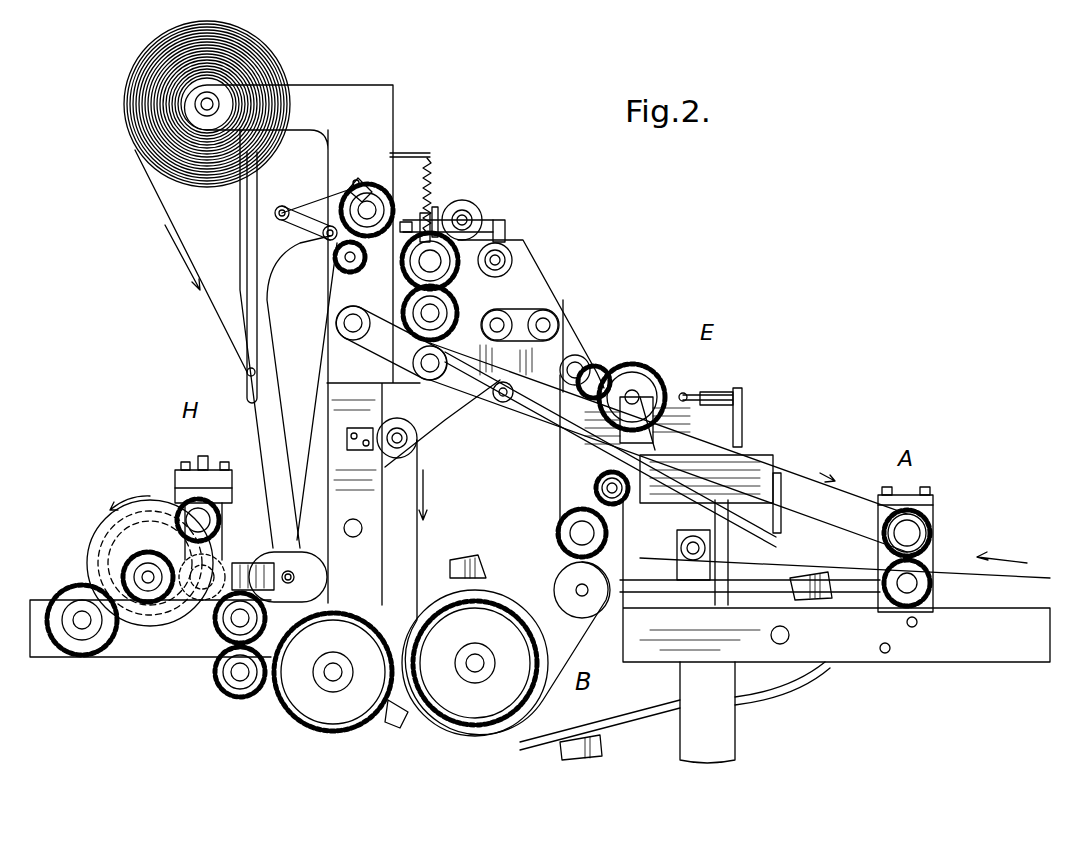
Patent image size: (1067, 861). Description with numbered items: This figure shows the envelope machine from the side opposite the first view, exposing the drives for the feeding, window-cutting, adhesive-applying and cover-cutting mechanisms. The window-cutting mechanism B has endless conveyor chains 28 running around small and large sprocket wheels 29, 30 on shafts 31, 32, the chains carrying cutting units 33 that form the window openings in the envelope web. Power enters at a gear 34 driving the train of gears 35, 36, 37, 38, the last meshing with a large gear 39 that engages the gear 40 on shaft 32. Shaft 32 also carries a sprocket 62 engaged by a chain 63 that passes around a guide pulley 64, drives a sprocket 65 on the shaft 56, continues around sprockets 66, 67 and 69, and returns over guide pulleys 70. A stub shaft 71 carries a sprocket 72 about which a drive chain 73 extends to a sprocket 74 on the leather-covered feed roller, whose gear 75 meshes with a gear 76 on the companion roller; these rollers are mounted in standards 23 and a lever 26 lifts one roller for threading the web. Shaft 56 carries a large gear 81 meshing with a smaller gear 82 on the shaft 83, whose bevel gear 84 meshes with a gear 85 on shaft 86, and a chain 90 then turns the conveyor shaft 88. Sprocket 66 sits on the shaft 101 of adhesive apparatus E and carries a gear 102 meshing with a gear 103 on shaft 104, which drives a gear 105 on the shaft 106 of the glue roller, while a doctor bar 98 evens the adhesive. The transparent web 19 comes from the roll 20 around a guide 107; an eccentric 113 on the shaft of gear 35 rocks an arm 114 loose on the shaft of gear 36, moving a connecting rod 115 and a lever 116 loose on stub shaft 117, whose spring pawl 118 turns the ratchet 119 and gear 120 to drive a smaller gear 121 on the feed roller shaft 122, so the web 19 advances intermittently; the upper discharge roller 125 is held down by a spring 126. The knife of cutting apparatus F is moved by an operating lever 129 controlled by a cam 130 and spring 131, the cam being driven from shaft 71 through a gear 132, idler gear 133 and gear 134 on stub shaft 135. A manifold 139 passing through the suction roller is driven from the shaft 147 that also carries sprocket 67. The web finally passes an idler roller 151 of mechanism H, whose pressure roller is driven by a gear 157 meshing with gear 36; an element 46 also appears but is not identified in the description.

The web of transparent paper 19 is at (200, 288).
The roll 20 is at (128, 146).
The standards 23 is at (934, 512).
The lever 26 is at (930, 570).
The endless conveyor chains 28 is at (652, 718).
The small sprocket wheels 29 is at (800, 672).
The large sprocket wheels 30 is at (555, 600).
The shaft 31 is at (790, 635).
The shaft 32 is at (470, 668).
The cutting units 33 is at (462, 556).
The gear 34 is at (100, 658).
The gear 35 is at (122, 560).
The gear 36 is at (170, 640).
The gear 37 is at (218, 640).
The gear 38 is at (238, 690).
The large gear 39 is at (305, 712).
The gear 40 is at (406, 726).
The bearing block 46 is at (710, 540).
The shaft 56 is at (570, 533).
The sprocket 62 is at (500, 726).
The chain 63 is at (420, 530).
The guide pulley 64 is at (606, 604).
The sprocket 65 is at (565, 545).
The sprocket 66 is at (563, 310).
The sprocket 67 is at (506, 358).
The sprocket 69 is at (360, 337).
The guide pulleys 70 is at (420, 448).
The stub shaft 71 is at (466, 372).
The sprocket 72 is at (472, 412).
The drive chain 73 is at (538, 416).
The sprocket 74 is at (888, 528).
The gear 75 is at (930, 536).
The gear 76 is at (930, 590).
The large gear 81 is at (565, 518).
The smaller gear 82 is at (600, 484).
The shaft 83 is at (590, 490).
The bevel gear 84 is at (606, 476).
The bevel gear 85 is at (580, 506).
The shaft 86 is at (782, 488).
The shaft 88 is at (782, 522).
The chain 90 is at (790, 470).
The doctor bar 98 is at (690, 393).
The shaft 101 is at (546, 318).
The gear 102 is at (560, 328).
The gear 103 is at (598, 368).
The shaft 104 is at (580, 360).
The gear 105 is at (645, 366).
The shaft 106 is at (640, 392).
The guide 107 is at (246, 372).
The eccentric 113 is at (150, 500).
The rocker arm 114 is at (240, 560).
The connecting rod 115 is at (262, 436).
The lever 116 is at (328, 242).
The stub shaft 117 is at (372, 192).
The spring pawl 118 is at (348, 185).
The ratchet 119 is at (404, 220).
The gear 120 is at (430, 215).
The smaller gear 121 is at (345, 272).
The shaft 122 is at (358, 258).
The feed roller 125 is at (470, 222).
The spring 126 is at (505, 232).
The operating lever 129 is at (466, 204).
The cam 130 is at (510, 252).
The spring 131 is at (430, 165).
The gear 132 is at (425, 381).
The idler gear 133 is at (455, 306).
The gear 134 is at (520, 276).
The stub shaft 135 is at (425, 268).
The manifold 139 is at (512, 262).
The shaft 147 is at (505, 320).
The roller 151 is at (309, 391).
The gear 157 is at (190, 490).